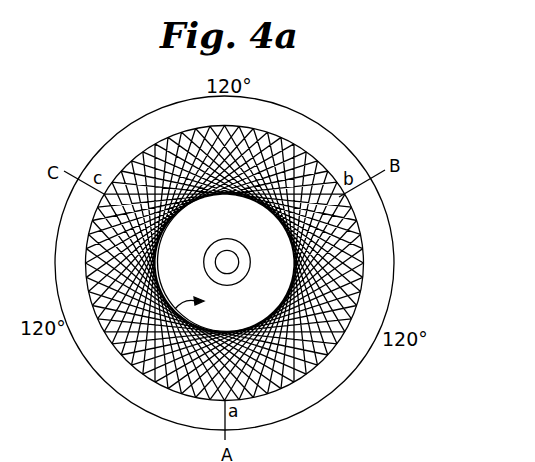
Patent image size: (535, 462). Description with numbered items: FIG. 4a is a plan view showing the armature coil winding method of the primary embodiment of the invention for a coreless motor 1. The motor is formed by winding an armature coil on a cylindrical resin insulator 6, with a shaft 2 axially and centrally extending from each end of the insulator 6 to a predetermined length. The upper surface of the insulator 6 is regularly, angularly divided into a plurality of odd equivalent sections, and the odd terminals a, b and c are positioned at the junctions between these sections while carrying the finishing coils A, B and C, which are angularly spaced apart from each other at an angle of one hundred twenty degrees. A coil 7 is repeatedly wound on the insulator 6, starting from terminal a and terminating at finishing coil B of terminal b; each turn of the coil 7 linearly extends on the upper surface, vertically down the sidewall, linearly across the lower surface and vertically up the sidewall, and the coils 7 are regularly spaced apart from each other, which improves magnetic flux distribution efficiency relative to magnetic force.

The rotor body / outer ring 1 is at (122, 407).
The shaft 2 is at (227, 258).
The cylindrical resin insulator 6 is at (138, 355).
The coil 7 is at (278, 370).